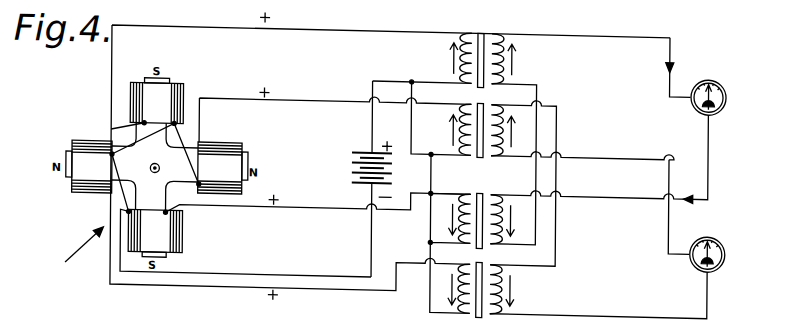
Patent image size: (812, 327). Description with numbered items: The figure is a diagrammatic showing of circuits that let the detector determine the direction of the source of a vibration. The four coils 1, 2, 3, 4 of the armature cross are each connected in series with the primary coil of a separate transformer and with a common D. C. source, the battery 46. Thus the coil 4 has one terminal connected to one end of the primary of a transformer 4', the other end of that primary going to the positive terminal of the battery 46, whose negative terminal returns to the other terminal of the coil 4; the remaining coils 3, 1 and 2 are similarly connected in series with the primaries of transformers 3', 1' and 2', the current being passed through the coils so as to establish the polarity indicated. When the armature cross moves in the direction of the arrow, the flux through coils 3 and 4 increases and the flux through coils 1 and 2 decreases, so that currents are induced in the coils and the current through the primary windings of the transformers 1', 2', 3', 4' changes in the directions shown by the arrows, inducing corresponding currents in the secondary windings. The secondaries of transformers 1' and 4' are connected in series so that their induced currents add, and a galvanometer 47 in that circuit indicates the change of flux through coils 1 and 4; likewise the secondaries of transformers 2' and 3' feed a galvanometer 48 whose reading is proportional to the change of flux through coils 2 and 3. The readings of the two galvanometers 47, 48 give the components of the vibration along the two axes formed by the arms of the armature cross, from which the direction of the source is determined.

The coil 1 is at (155, 230).
The coil 2 is at (92, 166).
The coil 3 is at (220, 168).
The coil 4 is at (156, 102).
The transformer 1' is at (491, 221).
The transformer 2' is at (491, 290).
The transformer 3' is at (490, 131).
The transformer 4' is at (491, 61).
The battery 46 is at (350, 157).
The galvanometer 47 is at (727, 69).
The galvanometer 48 is at (727, 245).